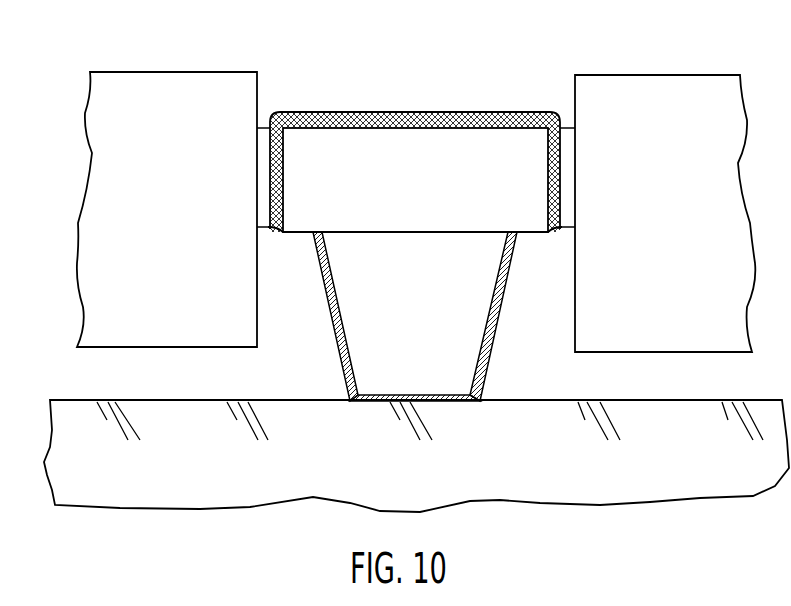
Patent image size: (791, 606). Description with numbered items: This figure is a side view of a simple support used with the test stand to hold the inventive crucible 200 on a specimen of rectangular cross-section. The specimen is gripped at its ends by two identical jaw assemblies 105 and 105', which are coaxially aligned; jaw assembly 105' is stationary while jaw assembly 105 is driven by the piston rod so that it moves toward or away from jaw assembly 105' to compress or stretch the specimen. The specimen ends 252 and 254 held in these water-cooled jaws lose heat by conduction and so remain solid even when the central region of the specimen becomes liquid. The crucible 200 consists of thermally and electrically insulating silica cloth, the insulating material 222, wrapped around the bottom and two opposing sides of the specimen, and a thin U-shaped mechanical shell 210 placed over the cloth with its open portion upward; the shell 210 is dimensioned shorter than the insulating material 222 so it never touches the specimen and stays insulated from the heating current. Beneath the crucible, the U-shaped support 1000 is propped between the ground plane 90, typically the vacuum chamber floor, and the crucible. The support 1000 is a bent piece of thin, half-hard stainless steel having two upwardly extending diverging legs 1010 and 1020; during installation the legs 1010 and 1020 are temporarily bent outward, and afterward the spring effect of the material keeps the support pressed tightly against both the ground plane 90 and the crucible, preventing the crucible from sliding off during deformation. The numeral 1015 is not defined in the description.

The ground plane 90 is at (115, 398).
The jaw assembly 105 is at (167, 209).
The jaw assembly 105' is at (665, 213).
The crucible 200 is at (415, 120).
The mechanical shell 210 is at (438, 192).
The insulating material 222 is at (347, 113).
The specimen end 252 is at (263, 127).
The specimen end 254 is at (562, 127).
The U-shaped support 1000 is at (415, 316).
The leg 1010 is at (325, 292).
The liner layer 1015 is at (445, 316).
The leg 1020 is at (505, 292).